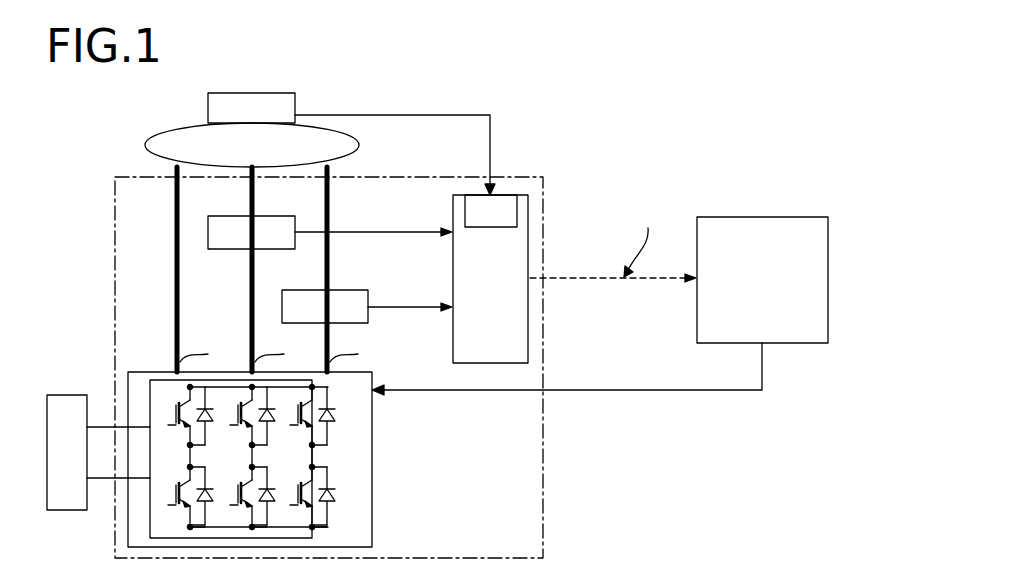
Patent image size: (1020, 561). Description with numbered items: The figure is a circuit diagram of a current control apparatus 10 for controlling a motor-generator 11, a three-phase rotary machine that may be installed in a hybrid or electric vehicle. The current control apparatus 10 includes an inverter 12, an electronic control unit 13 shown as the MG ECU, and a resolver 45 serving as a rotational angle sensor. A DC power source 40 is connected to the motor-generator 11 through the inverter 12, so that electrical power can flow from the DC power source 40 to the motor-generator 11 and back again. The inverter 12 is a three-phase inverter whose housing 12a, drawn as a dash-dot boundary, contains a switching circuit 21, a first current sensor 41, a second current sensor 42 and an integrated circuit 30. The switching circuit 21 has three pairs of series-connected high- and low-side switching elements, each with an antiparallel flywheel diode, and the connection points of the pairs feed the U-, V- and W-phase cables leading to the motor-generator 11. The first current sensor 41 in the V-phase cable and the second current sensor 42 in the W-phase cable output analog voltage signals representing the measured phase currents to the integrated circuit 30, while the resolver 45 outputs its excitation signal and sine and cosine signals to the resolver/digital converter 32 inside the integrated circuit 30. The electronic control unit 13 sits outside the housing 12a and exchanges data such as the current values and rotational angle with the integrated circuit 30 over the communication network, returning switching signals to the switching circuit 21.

The current control apparatus 10 is at (778, 124).
The motor-generator 11 is at (358, 145).
The inverter 12 is at (376, 338).
The housing 12a is at (528, 172).
The electronic control unit 13 is at (792, 216).
The switching circuit 21 is at (373, 415).
The integrated circuit 30 is at (522, 276).
The resolver/digital converter 32 is at (505, 228).
The DC power source 40 is at (66, 394).
The first current sensor 41 is at (268, 216).
The second current sensor 42 is at (342, 290).
The resolver 45 is at (247, 93).